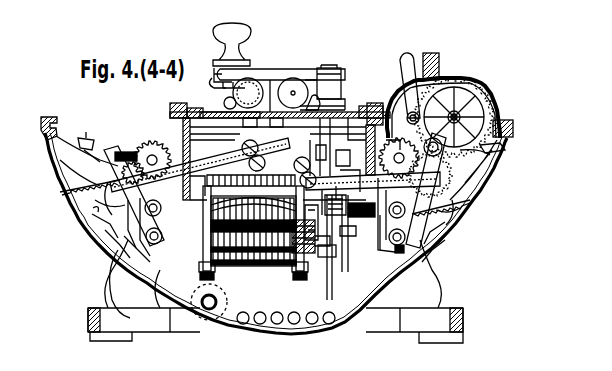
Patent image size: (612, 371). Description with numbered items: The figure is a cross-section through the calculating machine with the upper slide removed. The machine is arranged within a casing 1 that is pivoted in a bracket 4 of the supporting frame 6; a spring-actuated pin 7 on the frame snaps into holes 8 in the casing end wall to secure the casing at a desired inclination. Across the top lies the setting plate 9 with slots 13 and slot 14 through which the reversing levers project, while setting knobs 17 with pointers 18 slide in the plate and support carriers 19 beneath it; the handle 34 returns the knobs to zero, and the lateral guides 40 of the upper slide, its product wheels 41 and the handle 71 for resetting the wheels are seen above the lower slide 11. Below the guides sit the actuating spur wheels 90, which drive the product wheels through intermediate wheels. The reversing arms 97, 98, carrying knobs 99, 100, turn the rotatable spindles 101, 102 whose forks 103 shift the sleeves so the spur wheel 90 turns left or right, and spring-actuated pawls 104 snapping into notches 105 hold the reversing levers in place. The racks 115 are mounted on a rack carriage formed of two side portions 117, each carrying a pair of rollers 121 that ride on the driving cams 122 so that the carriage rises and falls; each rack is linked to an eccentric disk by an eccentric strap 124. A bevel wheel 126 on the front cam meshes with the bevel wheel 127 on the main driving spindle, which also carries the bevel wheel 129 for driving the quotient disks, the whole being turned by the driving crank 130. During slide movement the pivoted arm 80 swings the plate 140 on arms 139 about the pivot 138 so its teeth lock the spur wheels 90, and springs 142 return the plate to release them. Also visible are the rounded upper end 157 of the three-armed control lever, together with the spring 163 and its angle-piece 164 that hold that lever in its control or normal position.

The casing 1 is at (110, 197).
The bracket 4 is at (120, 281).
The supporting frame 6 is at (88, 321).
The spring-actuated pin 7 is at (228, 302).
The holes 8 is at (258, 324).
The setting plate 9 is at (212, 112).
The lower slide 11 is at (492, 92).
The slots 13 is at (268, 112).
The slot 14 is at (322, 84).
The setting knobs 17 is at (226, 102).
The indicating arms or pointers 18 is at (325, 108).
The carriers 19 is at (301, 164).
The handle 34 is at (212, 78).
The lateral guides 40 is at (503, 120).
The product wheels 41 is at (470, 104).
The handle 71 is at (440, 63).
The pivoted arm 80 is at (480, 110).
The spur wheels 90 is at (136, 162).
The reversing arm 97 is at (242, 146).
The reversing arm 98 is at (258, 155).
The knob 99 is at (248, 88).
The knob 100 is at (293, 90).
The rotatable spindle 101 is at (126, 240).
The rotatable spindle 102 is at (380, 248).
The forks 103 is at (152, 141).
The spring actuated pawls 104 is at (92, 218).
The notches 105 is at (106, 232).
The racks 115 is at (251, 174).
The side portions 117 is at (203, 250).
The rollers 121 is at (205, 272).
The driving cams 122 is at (261, 285).
The eccentric strap 124 is at (253, 239).
The bevel wheel 126 is at (344, 247).
The bevel wheel 127 is at (352, 229).
The bevel wheel 129 is at (332, 203).
The driving crank 130 is at (238, 30).
The pivot 138 is at (160, 286).
The arms 139 is at (96, 205).
The plate 140 is at (120, 154).
The springs 142 is at (70, 191).
The rounded upper end 157 is at (86, 138).
The spring 163 is at (112, 285).
The angle-piece 164 is at (440, 246).